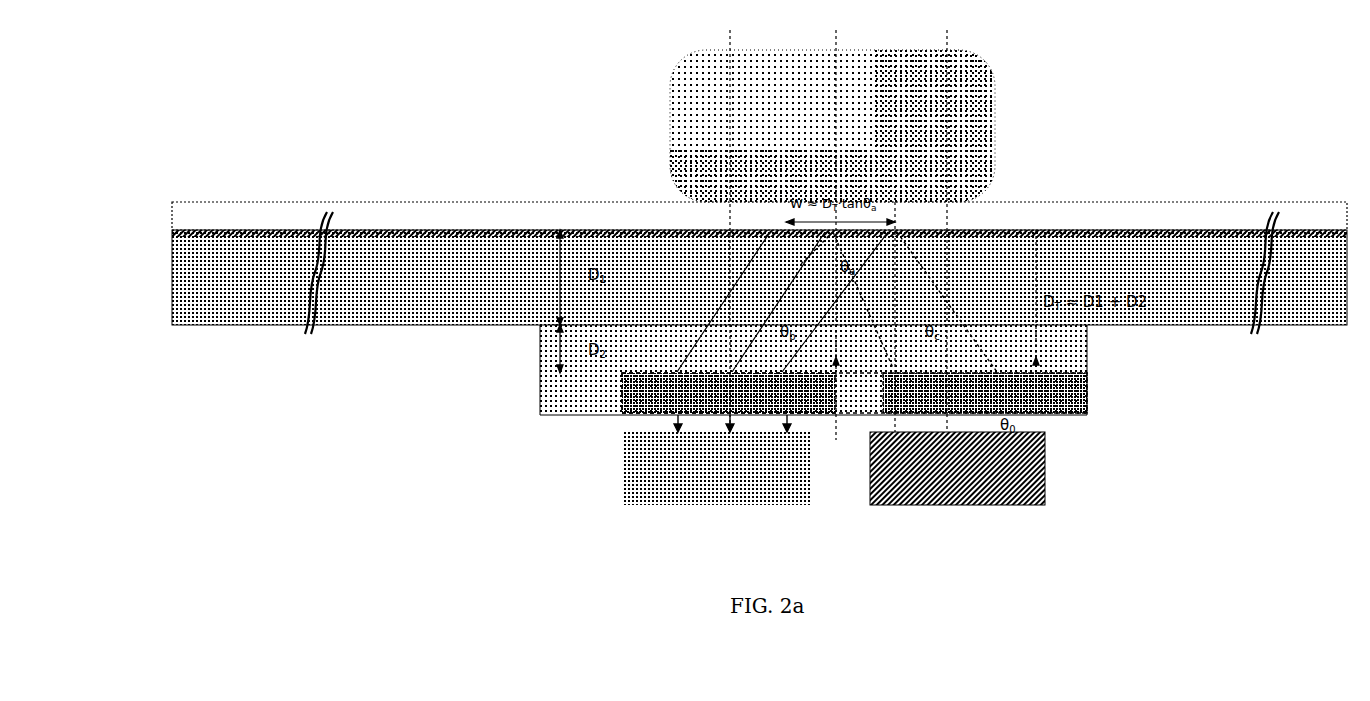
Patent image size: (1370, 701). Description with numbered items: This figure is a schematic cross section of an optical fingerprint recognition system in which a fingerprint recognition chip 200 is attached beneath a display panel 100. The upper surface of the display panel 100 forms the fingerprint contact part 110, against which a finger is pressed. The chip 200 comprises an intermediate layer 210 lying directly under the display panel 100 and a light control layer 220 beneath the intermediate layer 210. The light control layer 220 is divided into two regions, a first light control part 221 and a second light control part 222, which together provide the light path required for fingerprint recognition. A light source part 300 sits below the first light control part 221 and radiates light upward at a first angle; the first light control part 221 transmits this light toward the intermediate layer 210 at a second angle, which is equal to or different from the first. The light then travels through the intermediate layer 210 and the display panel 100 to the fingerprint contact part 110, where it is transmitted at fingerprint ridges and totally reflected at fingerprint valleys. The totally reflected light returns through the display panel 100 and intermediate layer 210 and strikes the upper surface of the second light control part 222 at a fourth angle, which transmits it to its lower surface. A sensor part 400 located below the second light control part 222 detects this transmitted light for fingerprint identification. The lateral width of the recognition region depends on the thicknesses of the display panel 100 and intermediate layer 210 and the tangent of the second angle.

The display panel 100 is at (759, 273).
The fingerprint contact part 110 is at (997, 213).
The fingerprint recognition chip 200 is at (360, 413).
The intermediate layer 210 is at (727, 370).
The light control layer 220 is at (727, 410).
The first light control part 221 is at (985, 393).
The second light control part 222 is at (720, 393).
The light source part 300 is at (957, 468).
The sensor part 400 is at (717, 468).